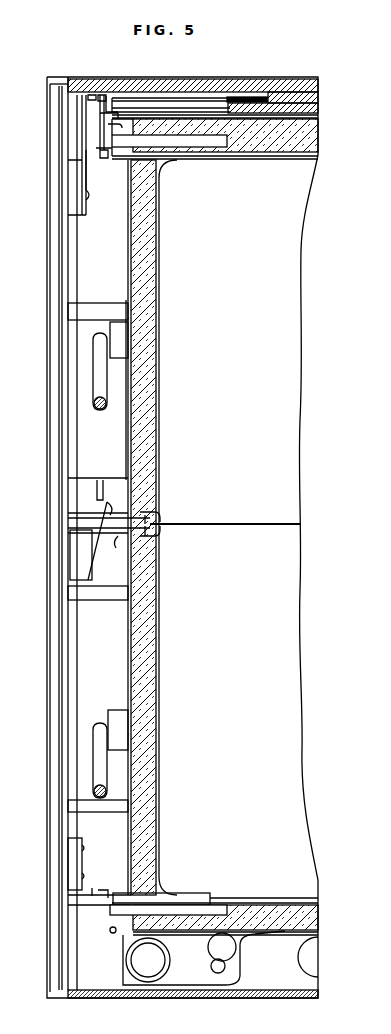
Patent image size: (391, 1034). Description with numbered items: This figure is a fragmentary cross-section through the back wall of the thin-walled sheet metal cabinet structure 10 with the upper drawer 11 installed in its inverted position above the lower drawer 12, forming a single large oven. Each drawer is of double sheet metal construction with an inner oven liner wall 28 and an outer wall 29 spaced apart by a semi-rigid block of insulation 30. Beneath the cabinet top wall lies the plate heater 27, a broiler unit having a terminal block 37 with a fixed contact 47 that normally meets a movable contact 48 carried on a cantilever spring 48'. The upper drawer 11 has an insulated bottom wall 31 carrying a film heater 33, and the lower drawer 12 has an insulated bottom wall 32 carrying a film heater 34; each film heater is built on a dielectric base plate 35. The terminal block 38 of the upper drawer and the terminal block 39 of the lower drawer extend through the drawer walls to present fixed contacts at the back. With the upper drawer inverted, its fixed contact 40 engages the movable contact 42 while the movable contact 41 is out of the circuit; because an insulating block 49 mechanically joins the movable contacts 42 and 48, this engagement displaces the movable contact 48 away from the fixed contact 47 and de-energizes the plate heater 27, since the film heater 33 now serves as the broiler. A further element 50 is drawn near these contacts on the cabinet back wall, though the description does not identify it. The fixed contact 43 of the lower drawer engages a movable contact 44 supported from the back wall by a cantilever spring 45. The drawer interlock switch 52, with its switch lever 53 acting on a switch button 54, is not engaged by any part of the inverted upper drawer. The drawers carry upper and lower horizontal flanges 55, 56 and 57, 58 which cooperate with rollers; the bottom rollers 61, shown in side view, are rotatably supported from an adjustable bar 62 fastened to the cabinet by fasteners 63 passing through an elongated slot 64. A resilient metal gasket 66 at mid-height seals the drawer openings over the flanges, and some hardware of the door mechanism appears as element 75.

The cabinet structure 10 is at (277, 79).
The upper drawer 11 is at (220, 308).
The lower drawer 12 is at (212, 639).
The plate heater 27 is at (320, 108).
The inner oven liner wall 28 is at (162, 446).
The outer wall 29 is at (128, 450).
The block of insulation 30 is at (136, 472).
The insulated bottom wall 31 is at (320, 138).
The insulated bottom wall 32 is at (310, 927).
The film heater 33 is at (283, 158).
The film heater 34 is at (257, 895).
The dielectric base plate 35 is at (306, 160).
The terminal block 37 is at (143, 107).
The terminal block 38 is at (171, 165).
The terminal block 39 is at (182, 897).
The fixed contact 40 is at (104, 156).
The movable contact 41 is at (100, 480).
The movable contact 42 is at (96, 160).
The fixed contact 43 is at (107, 897).
The movable contact 44 is at (95, 893).
The cantilever spring 45 is at (83, 903).
The fixed contact 47 is at (111, 101).
The movable contact 48 is at (105, 79).
The cantilever spring 48' is at (81, 78).
The insulating block 49 is at (100, 116).
The lower flange 50 is at (98, 152).
The drawer interlock switch 52 is at (70, 570).
The switch lever 53 is at (107, 523).
The switch button 54 is at (90, 543).
The upper horizontal flange 55 is at (157, 521).
The lower horizontal flange 56 is at (113, 121).
The upper horizontal flange 57 is at (155, 535).
The lower horizontal flange 58 is at (112, 932).
The bottom roller 61 is at (137, 960).
The adjustable bar 62 is at (185, 973).
The fastener 63 is at (222, 947).
The elongated slot 64 is at (218, 962).
The resilient metal gasket 66 is at (118, 545).
The door mechanism hardware 75 is at (105, 410).